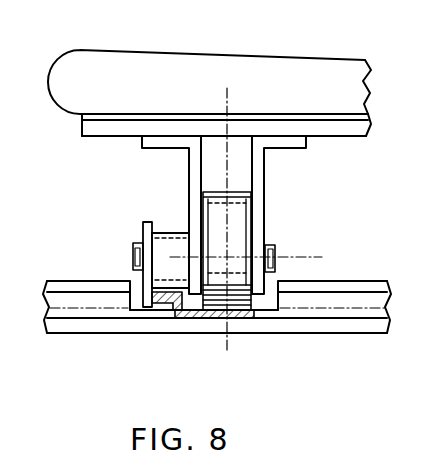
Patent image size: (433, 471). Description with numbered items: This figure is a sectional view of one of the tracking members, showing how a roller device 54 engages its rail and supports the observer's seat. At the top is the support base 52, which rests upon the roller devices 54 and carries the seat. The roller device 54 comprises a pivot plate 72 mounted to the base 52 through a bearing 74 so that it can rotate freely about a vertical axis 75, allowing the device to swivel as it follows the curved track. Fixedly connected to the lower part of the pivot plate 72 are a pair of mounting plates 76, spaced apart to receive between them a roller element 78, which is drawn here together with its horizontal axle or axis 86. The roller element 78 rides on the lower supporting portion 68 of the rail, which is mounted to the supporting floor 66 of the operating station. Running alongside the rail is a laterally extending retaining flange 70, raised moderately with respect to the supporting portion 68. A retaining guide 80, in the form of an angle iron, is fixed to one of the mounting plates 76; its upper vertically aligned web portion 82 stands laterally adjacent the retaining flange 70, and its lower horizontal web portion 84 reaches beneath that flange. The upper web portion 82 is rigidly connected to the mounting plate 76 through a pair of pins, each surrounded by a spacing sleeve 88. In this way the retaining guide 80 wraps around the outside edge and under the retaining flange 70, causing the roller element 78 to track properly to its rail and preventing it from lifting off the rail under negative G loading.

The support base 52 is at (348, 70).
The roller device 54 is at (355, 204).
The supporting floor 66 is at (362, 336).
The lower supporting portion 68 is at (247, 320).
The retaining flange 70 is at (153, 297).
The pivot plate 72 is at (361, 138).
The bearing 74 is at (369, 114).
The vertical axis 75 is at (228, 106).
The mounting plate 76 is at (206, 172).
The roller element 78 is at (217, 312).
The retaining guide 80 is at (146, 219).
The upper vertically aligned web portion 82 is at (139, 233).
The lower horizontal web portion 84 is at (157, 312).
The axle 86 is at (299, 256).
The spacing sleeve 88 is at (171, 229).